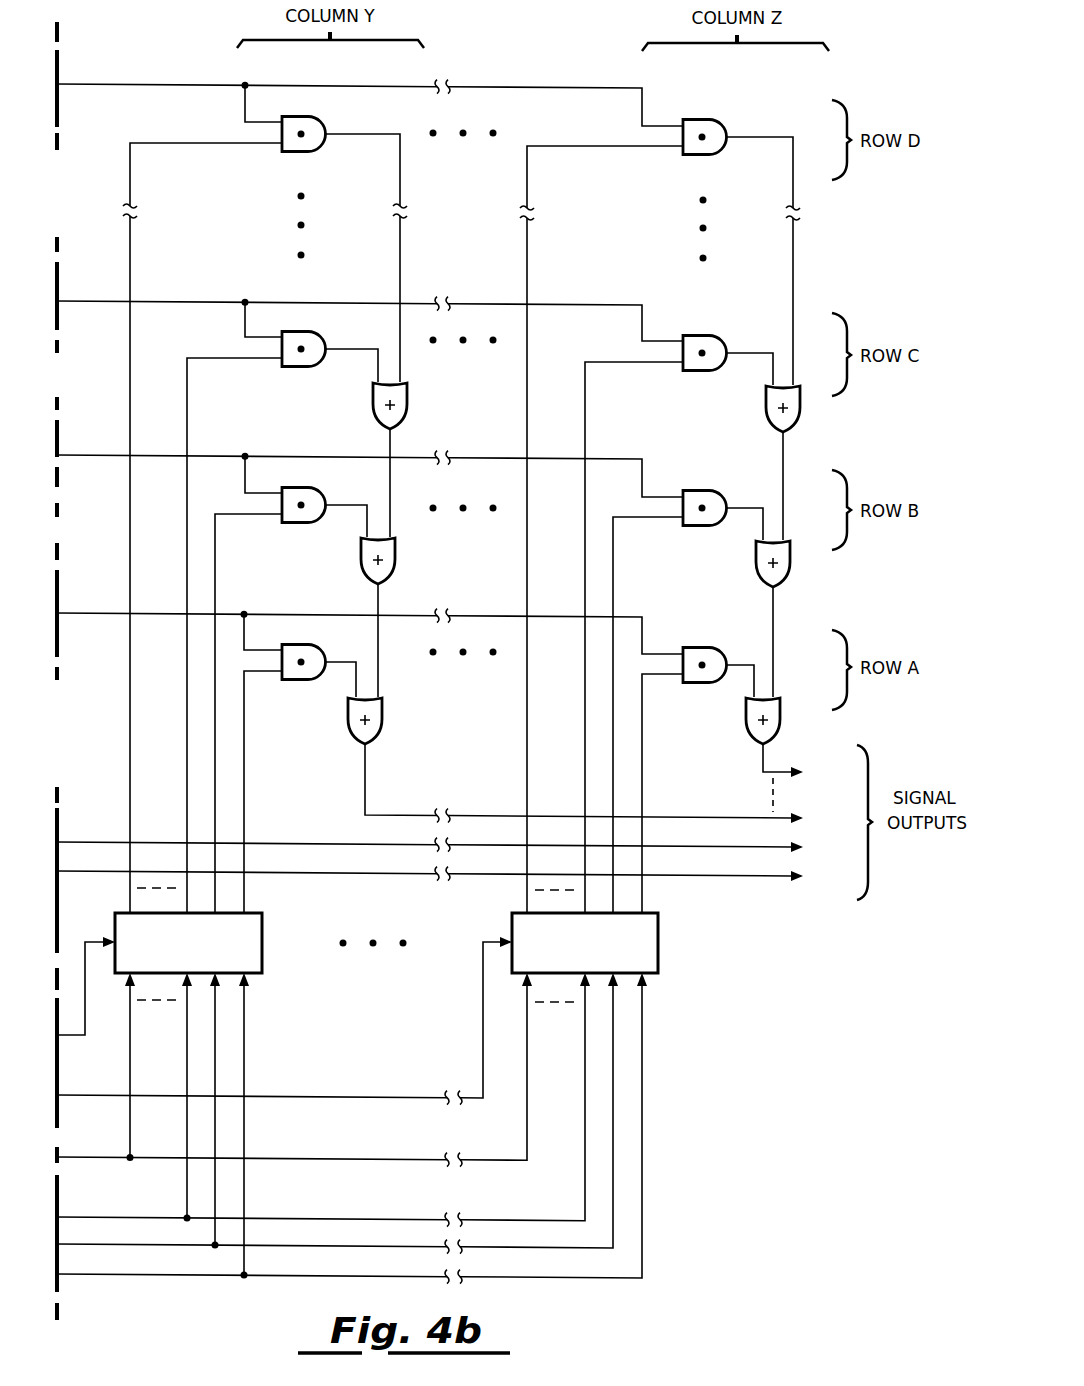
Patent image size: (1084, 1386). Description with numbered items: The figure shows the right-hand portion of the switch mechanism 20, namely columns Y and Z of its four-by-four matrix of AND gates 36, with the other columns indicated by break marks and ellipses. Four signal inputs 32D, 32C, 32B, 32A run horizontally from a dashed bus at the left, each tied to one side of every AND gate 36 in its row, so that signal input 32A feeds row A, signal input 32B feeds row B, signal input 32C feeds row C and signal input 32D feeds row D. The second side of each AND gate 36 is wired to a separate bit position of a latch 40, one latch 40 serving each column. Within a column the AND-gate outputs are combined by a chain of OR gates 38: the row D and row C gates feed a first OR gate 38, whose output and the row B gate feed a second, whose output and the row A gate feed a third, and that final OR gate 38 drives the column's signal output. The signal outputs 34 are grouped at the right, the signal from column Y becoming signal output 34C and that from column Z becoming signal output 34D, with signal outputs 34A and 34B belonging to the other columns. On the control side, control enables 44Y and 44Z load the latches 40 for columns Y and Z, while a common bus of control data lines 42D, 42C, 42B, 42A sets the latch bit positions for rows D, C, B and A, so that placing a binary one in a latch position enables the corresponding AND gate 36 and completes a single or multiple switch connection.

The switch mechanism 20 is at (886, 46).
The signal input 32D is at (121, 82).
The signal input 32C is at (121, 299).
The signal input 32B is at (121, 453).
The signal input 32A is at (121, 611).
The signal outputs 34 is at (924, 849).
The signal output 34D is at (806, 778).
The signal output 34C is at (606, 786).
The signal output 34B is at (452, 847).
The signal output 34A is at (452, 876).
The AND gate 36 is at (312, 645).
The OR gate 38 is at (746, 727).
The latch 40 is at (658, 924).
The control data line 42D is at (121, 1156).
The control data line 42C is at (121, 1216).
The control data line 42B is at (121, 1244).
The control data line 42A is at (121, 1273).
The control enable 44Y is at (92, 1022).
The control enable 44Z is at (121, 1094).